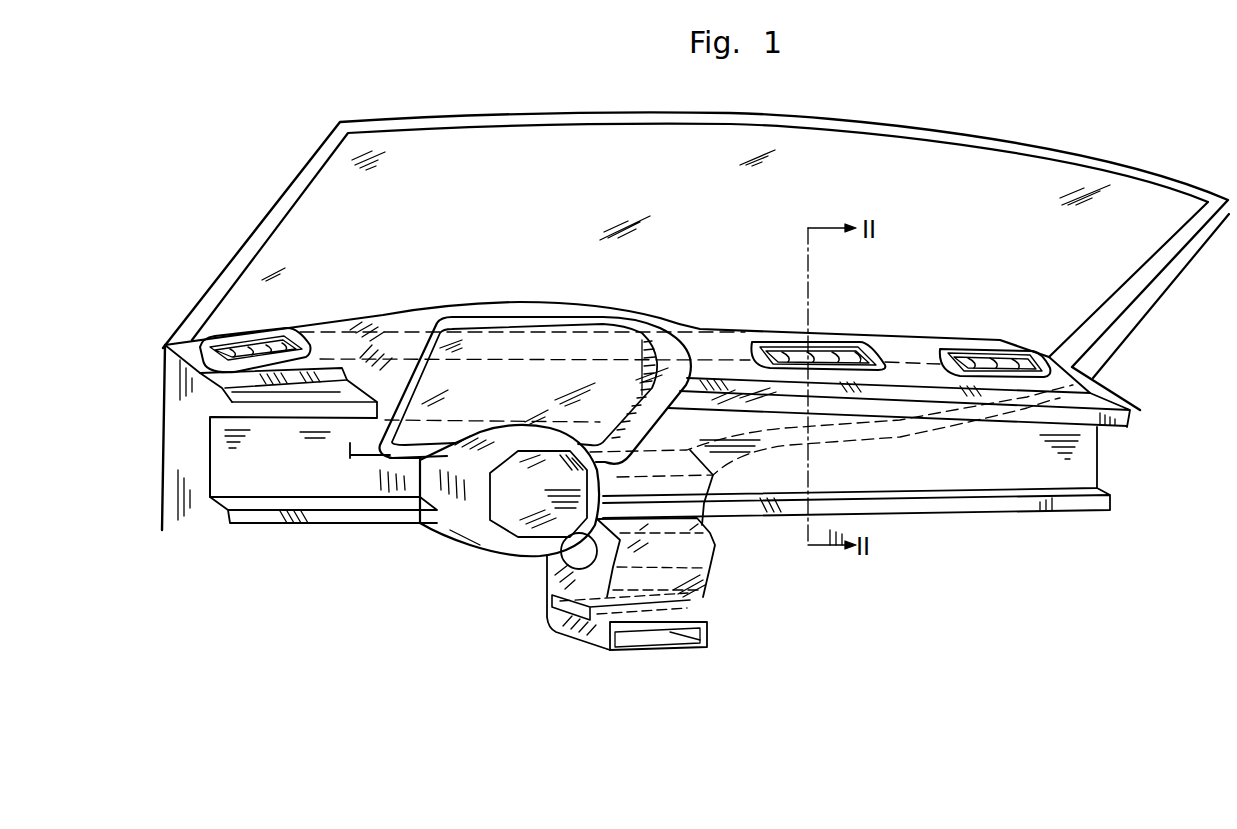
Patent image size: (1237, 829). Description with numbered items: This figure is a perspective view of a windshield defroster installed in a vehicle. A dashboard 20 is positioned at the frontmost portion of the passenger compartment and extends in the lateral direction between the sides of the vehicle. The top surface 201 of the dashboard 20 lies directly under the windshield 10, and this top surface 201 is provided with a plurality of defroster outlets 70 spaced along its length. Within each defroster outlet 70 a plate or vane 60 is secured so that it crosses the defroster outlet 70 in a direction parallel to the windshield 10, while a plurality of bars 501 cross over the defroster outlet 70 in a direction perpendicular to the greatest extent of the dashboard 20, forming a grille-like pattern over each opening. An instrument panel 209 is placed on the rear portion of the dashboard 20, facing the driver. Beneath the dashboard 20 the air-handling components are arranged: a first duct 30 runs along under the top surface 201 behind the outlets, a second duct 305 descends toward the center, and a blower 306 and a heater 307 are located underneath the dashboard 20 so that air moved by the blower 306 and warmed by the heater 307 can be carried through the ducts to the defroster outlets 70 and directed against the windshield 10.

The windshield 10 is at (927, 152).
The dashboard 20 is at (1083, 400).
The first duct 30 is at (867, 433).
The vane 60 is at (267, 345).
The defroster outlet 70 is at (212, 343).
The top surface 201 is at (920, 350).
The instrument panel 209 is at (417, 432).
The second duct 305 is at (717, 480).
The blower 306 is at (690, 557).
The heater 307 is at (697, 608).
The bar 501 is at (245, 345).